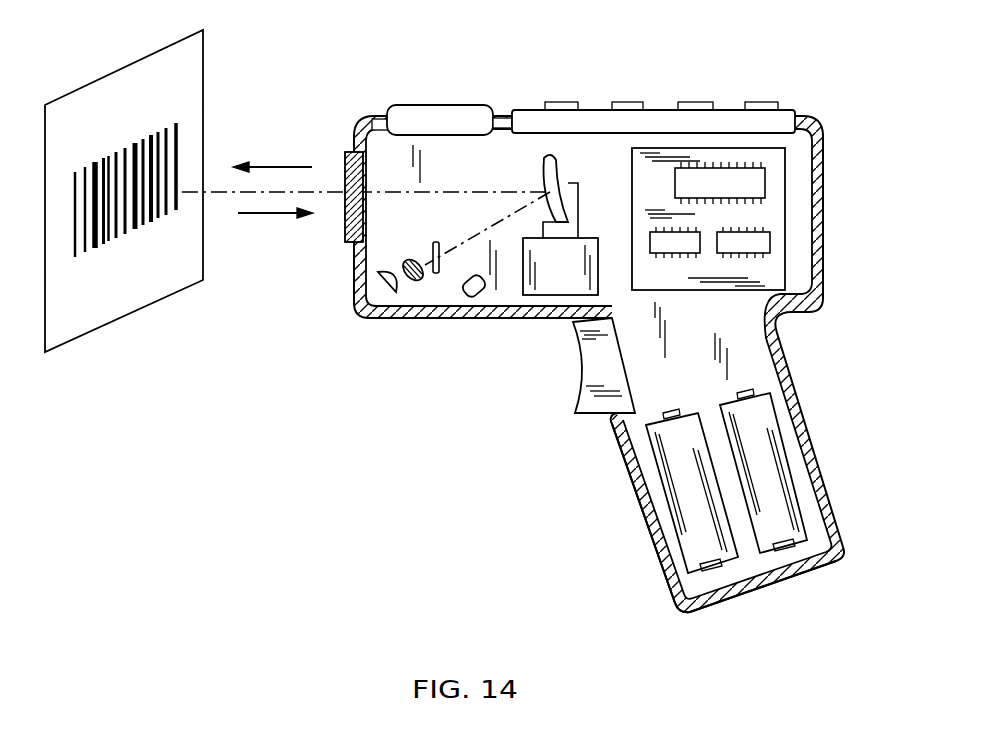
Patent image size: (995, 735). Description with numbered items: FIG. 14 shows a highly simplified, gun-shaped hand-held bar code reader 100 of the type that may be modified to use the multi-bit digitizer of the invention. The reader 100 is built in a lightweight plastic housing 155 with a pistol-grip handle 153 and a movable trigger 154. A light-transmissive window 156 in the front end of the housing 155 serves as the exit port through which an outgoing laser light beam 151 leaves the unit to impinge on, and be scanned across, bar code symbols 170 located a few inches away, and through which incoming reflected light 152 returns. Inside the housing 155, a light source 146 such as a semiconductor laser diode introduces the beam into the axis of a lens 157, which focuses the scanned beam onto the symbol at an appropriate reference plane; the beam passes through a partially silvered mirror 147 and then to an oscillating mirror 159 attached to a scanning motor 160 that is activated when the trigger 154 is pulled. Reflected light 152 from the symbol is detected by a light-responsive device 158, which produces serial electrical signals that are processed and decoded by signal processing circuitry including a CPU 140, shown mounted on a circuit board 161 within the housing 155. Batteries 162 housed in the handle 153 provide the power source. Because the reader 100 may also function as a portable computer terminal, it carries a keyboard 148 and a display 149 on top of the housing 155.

The reader 100 is at (584, 315).
The CPU 140 is at (682, 177).
The light source 146 is at (378, 283).
The partially silvered mirror 147 is at (437, 277).
The keyboard 148 is at (732, 117).
The display 149 is at (410, 112).
The outgoing light beam 151 is at (268, 166).
The reflected light 152 is at (275, 215).
The handle 153 is at (644, 513).
The trigger 154 is at (573, 407).
The housing 155 is at (824, 243).
The light-transmissive window 156 is at (345, 170).
The lens 157 is at (415, 285).
The light-responsive device 158 is at (485, 289).
The oscillating mirror 159 is at (557, 165).
The scanning motor 160 is at (567, 290).
The circuit board 161 is at (759, 169).
The batteries 162 is at (738, 394).
The symbols 170 is at (147, 137).